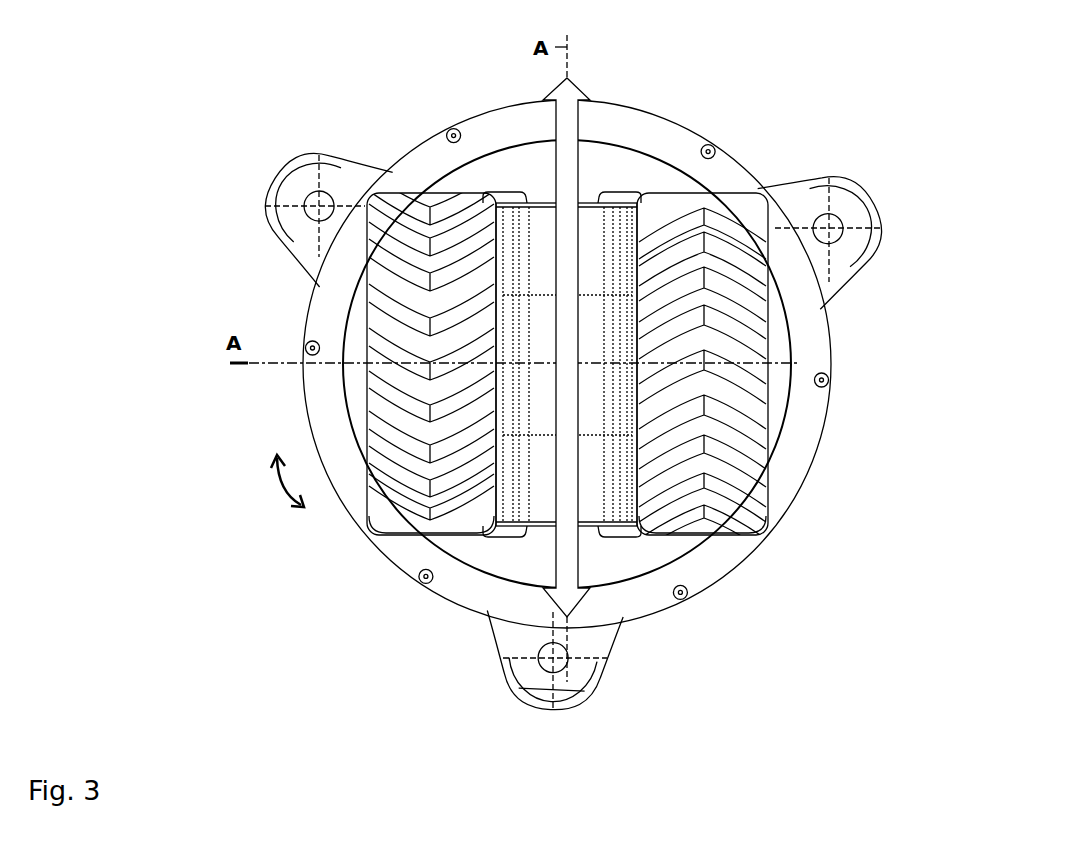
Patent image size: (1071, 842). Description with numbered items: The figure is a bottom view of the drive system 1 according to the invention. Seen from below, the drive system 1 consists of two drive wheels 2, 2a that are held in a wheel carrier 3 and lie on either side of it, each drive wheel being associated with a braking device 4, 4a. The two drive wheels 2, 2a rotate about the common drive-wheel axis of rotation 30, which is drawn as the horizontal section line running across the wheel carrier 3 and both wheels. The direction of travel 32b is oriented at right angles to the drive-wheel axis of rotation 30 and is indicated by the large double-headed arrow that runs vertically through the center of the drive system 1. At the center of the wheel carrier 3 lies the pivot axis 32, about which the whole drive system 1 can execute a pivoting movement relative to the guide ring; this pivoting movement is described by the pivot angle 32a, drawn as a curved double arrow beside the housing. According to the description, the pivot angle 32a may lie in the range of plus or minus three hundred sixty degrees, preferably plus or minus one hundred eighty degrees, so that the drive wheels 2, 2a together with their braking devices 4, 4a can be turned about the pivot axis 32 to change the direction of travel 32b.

The drive system 1 is at (185, 270).
The drive wheel 2 is at (360, 445).
The drive wheel 2a is at (757, 398).
The wheel carrier 3 is at (548, 512).
The braking device 4 is at (497, 532).
The braking device 4a is at (740, 535).
The drive-wheel axis of rotation 30 is at (840, 362).
The pivot axis 32 is at (555, 355).
The pivot angle 32a is at (282, 482).
The direction of travel 32b is at (588, 97).